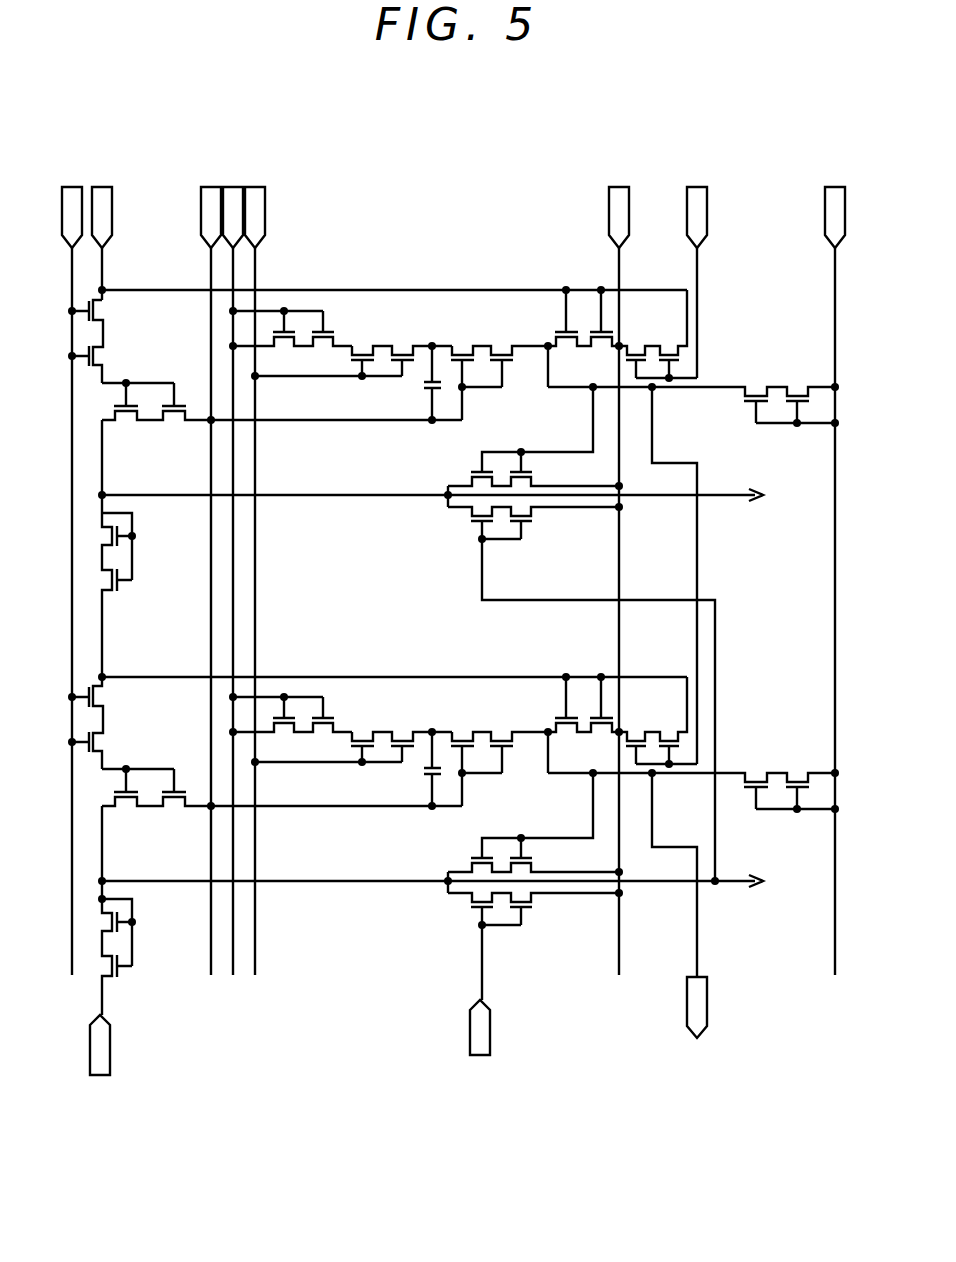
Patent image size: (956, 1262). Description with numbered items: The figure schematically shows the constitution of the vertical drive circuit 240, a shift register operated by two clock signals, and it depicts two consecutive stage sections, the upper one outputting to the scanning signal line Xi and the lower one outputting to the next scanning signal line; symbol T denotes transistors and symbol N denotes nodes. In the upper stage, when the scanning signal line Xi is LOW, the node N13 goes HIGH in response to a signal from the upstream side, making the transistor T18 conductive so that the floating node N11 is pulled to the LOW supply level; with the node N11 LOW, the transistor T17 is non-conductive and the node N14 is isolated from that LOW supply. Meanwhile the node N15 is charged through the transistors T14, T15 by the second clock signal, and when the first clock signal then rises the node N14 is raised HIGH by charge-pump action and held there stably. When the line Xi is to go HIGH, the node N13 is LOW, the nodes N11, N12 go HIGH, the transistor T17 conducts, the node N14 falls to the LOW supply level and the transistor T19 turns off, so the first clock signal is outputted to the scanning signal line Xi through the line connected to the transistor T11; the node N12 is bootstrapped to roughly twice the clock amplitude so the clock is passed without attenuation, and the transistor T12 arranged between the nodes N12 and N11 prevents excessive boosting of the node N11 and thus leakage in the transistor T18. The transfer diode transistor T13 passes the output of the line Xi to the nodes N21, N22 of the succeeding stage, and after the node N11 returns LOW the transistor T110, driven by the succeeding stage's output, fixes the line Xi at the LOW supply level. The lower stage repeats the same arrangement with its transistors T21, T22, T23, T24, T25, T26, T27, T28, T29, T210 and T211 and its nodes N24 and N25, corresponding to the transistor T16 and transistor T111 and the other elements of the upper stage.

The vertical drive circuit 240 is at (460, 173).
The transistor T11 is at (158, 414).
The transistor T12 is at (106, 341).
The transfer diode transistor T13 is at (137, 548).
The transistor T14 is at (290, 339).
The transistor T15 is at (341, 348).
The transistor T16 is at (499, 368).
The transistor T17 is at (583, 338).
The transistor T18 is at (658, 336).
The transistor T19 is at (535, 445).
The transistor T110 is at (583, 694).
The transistor T111 is at (693, 392).
The transistor T21 is at (158, 801).
The transistor T22 is at (106, 723).
The transistor T23 is at (135, 910).
The transistor T24 is at (290, 725).
The transistor T25 is at (341, 735).
The transistor T26 is at (499, 755).
The transistor T27 is at (583, 725).
The transistor T28 is at (658, 722).
The transistor T29 is at (535, 831).
The transistor T210 is at (535, 944).
The transistor T211 is at (693, 779).
The node N11 is at (392, 280).
The node N12 is at (138, 375).
The node N13 is at (715, 313).
The node N14 is at (672, 573).
The node N15 is at (336, 370).
The node N21 is at (392, 667).
The node N22 is at (138, 761).
The node N24 is at (672, 873).
The node N25 is at (336, 757).
The scanning signal line Xi is at (442, 496).